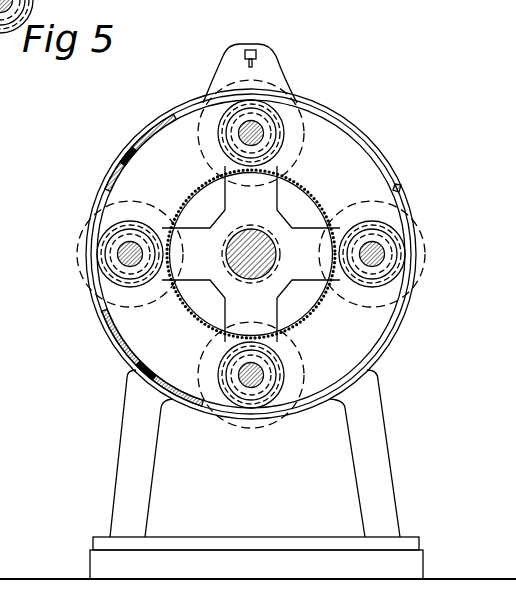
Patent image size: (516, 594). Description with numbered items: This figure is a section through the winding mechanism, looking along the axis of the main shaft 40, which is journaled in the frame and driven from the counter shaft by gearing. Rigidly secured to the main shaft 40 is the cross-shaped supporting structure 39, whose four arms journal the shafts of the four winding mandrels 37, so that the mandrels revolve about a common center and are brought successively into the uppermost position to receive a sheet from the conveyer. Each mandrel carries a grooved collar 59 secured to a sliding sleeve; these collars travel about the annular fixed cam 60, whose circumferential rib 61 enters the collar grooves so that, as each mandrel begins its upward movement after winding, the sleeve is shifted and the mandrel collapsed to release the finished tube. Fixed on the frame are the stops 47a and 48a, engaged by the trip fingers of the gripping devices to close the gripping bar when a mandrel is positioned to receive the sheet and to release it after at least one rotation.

The winding mandrel 37 is at (297, 101).
The supporting structure 39 is at (203, 268).
The main shaft 40 is at (238, 282).
The stop 47a is at (258, 65).
The stop 48a is at (400, 187).
The grooved collar 59 is at (220, 140).
The annular fixed cam 60 is at (102, 176).
The circumferential rib 61 is at (118, 180).